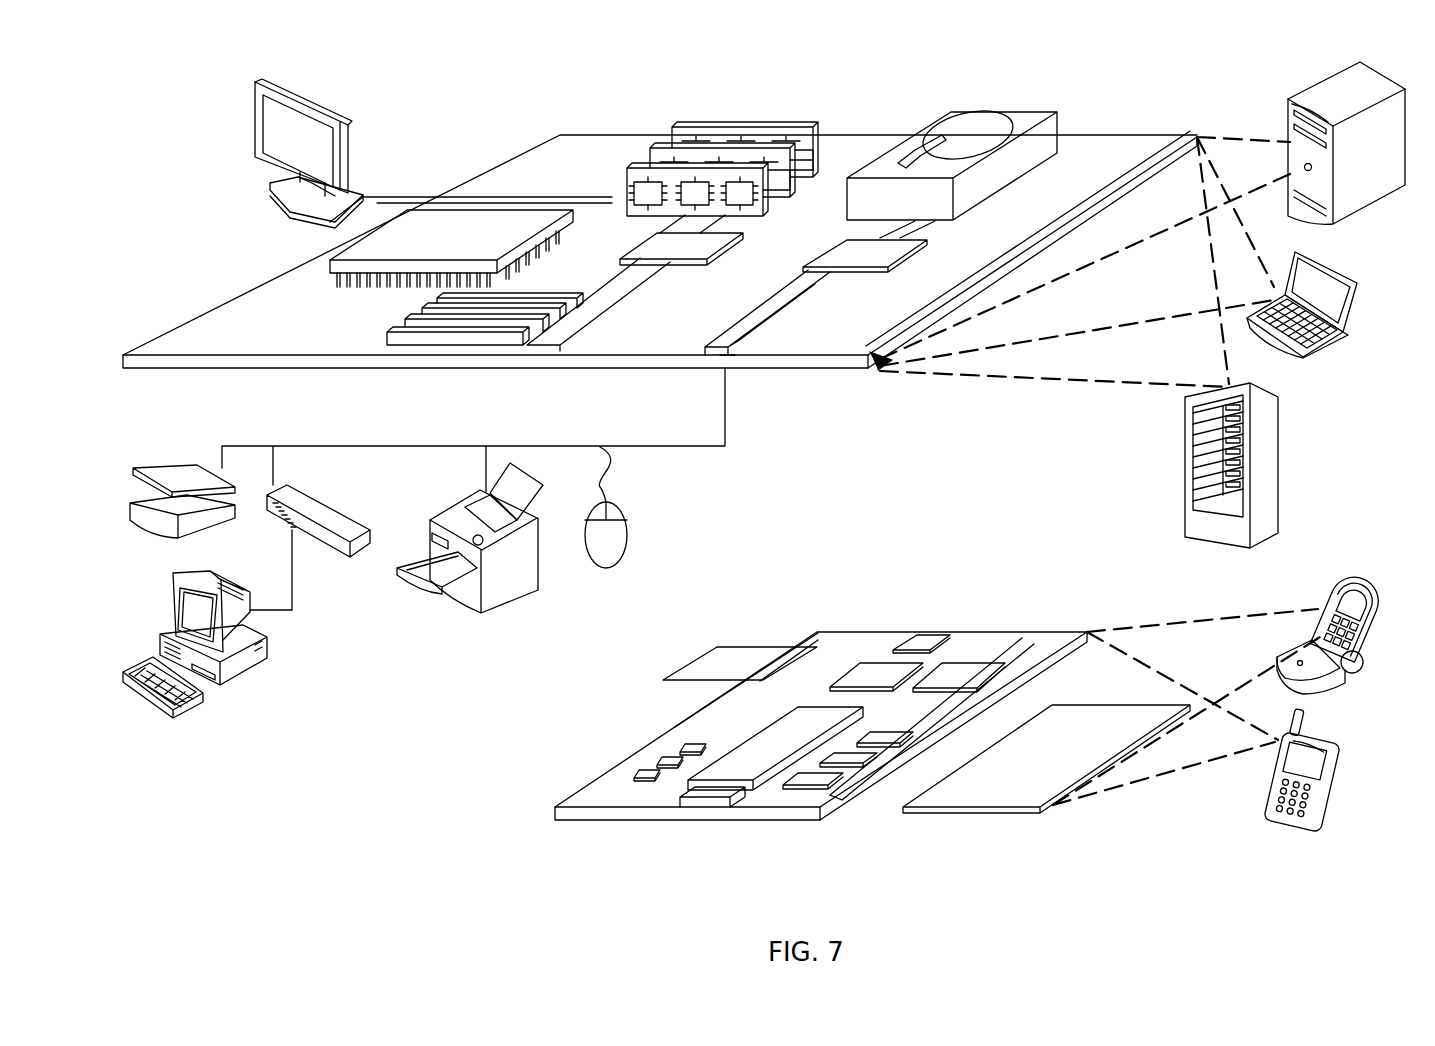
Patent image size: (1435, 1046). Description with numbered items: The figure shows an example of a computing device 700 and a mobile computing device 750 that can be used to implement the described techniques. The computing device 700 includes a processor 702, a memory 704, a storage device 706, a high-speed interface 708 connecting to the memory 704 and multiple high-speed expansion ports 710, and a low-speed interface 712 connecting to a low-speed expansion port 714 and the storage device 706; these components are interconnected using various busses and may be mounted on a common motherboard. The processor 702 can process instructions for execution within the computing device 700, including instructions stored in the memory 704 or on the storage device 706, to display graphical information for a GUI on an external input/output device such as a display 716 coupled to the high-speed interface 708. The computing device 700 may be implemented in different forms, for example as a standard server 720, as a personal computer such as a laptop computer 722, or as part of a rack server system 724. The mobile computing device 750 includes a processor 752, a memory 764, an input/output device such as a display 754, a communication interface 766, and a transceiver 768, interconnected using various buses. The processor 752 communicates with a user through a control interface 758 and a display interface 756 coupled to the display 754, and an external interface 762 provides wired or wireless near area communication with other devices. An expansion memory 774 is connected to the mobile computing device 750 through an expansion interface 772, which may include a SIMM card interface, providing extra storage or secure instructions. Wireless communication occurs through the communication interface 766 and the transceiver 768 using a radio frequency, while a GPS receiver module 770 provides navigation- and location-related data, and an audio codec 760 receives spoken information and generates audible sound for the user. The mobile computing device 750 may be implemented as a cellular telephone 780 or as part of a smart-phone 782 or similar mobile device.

The computing device 700 is at (472, 94).
The processor 702 is at (340, 263).
The memory 704 is at (690, 128).
The storage device 706 is at (950, 112).
The high-speed interface 708 is at (628, 240).
The high-speed expansion ports 710 is at (407, 325).
The low-speed interface 712 is at (846, 245).
The low-speed expansion port 714 is at (724, 358).
The display 716 is at (258, 80).
The standard server 720 is at (1288, 118).
The laptop computer 722 is at (1355, 283).
The rack server system 724 is at (1186, 494).
The mobile computing device 750 is at (532, 835).
The processor 752 is at (748, 770).
The display 754 is at (1000, 790).
The display interface 756 is at (823, 790).
The control interface 758 is at (848, 762).
The audio codec 760 is at (883, 740).
The external interface 762 is at (708, 812).
The memory 764 is at (655, 761).
The communication interface 766 is at (873, 672).
The transceiver 768 is at (959, 672).
The GPS receiver module 770 is at (933, 640).
The expansion interface 772 is at (803, 646).
The expansion memory 774 is at (718, 648).
The cellular telephone 780 is at (1338, 584).
The smart-phone 782 is at (1273, 780).